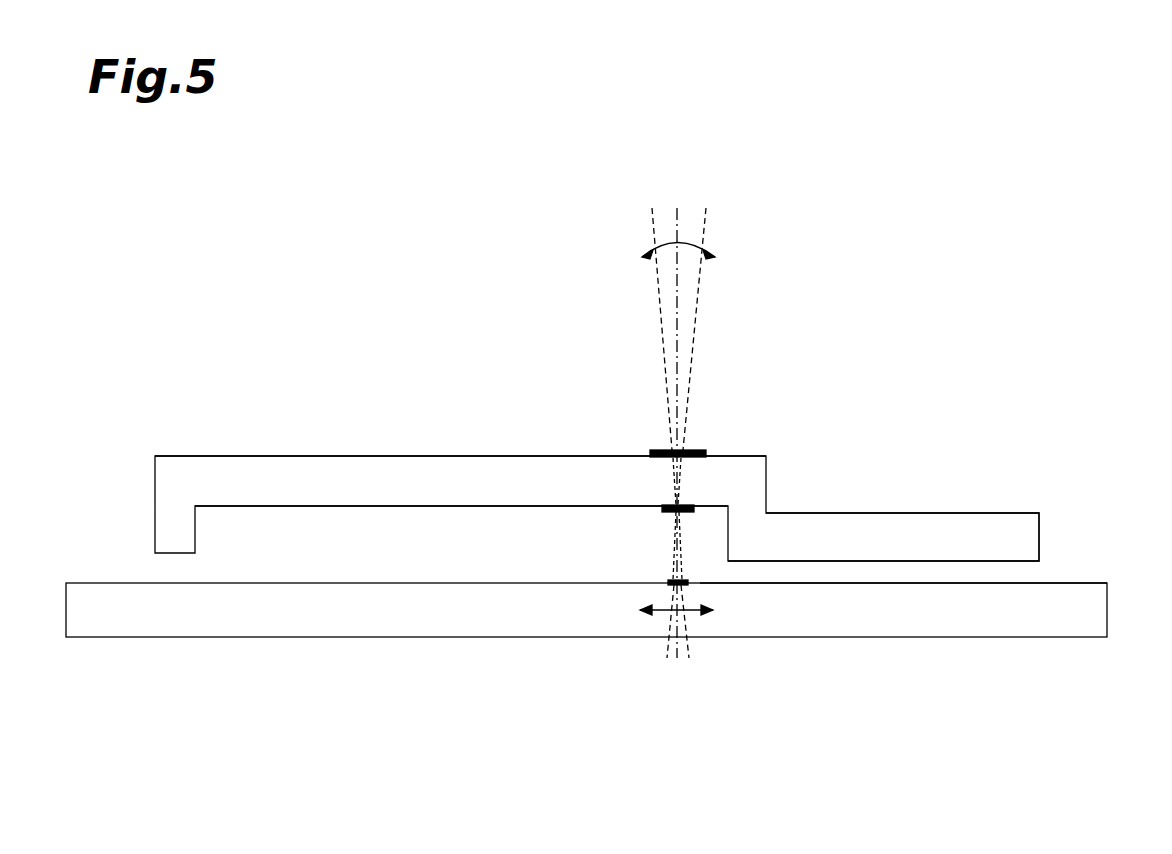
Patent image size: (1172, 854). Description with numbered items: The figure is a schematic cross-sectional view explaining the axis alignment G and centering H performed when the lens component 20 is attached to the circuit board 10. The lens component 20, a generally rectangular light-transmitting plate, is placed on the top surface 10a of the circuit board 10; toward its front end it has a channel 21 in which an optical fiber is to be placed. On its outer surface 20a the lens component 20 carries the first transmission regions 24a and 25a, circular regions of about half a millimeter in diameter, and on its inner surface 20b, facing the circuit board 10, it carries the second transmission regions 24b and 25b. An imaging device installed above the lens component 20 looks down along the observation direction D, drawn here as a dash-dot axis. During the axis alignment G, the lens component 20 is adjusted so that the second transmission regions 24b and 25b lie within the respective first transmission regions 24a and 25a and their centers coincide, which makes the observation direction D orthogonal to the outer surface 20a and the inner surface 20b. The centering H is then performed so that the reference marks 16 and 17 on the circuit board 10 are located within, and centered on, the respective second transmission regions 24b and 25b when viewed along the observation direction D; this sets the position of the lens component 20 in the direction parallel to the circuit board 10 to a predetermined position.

The circuit board 10 is at (281, 645).
The top surface of the circuit board 10a is at (1048, 583).
The reference mark 16 is at (752, 639).
The reference mark 17 is at (688, 582).
The lens component 20 is at (243, 453).
The outer surface 20a is at (318, 455).
The inner surface 20b is at (318, 507).
The channel 21 is at (963, 518).
The first transmission region 24a is at (597, 434).
The first transmission region 25a is at (653, 452).
The second transmission region 24b is at (593, 532).
The second transmission region 25b is at (662, 510).
The observation direction D is at (681, 208).
The axis alignment G is at (690, 243).
The centering H is at (660, 613).